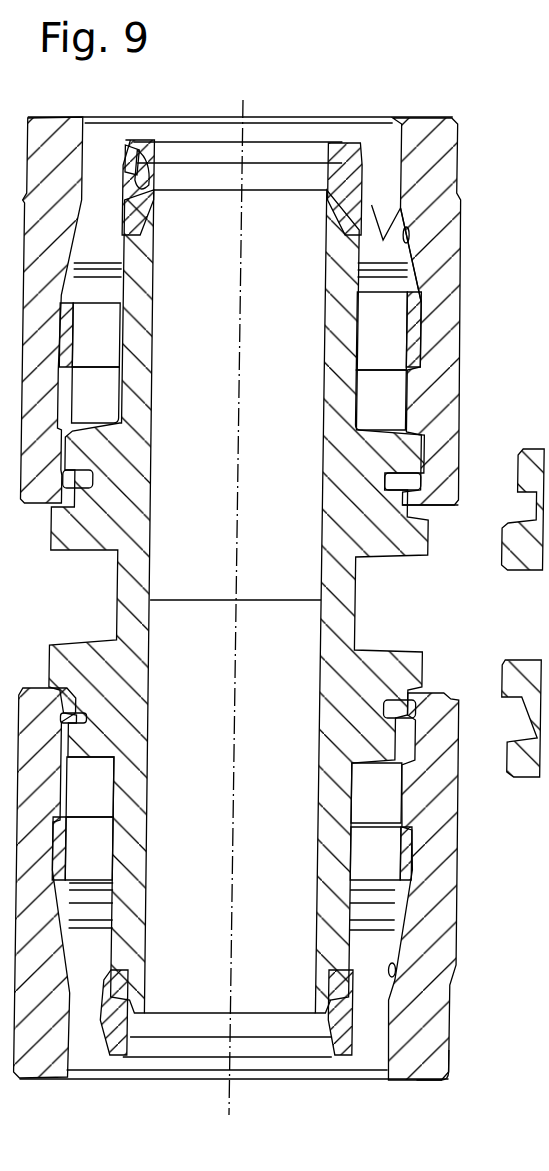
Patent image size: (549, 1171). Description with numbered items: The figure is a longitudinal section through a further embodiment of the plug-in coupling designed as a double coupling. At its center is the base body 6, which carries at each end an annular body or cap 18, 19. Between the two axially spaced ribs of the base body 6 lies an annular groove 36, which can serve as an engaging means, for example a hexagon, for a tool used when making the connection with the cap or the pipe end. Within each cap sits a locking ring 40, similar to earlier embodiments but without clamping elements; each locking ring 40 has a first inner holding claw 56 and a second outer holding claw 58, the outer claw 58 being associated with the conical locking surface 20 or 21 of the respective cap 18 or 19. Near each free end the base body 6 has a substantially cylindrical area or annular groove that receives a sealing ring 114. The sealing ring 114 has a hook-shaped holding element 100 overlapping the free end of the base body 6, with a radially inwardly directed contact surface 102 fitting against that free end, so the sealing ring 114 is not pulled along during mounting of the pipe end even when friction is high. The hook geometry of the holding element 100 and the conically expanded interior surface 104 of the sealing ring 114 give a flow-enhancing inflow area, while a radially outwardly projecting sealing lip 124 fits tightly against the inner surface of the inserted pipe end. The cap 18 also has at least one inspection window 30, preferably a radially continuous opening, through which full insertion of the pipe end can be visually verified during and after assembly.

The base body 6 is at (345, 600).
The annular body 18 is at (443, 492).
The cap 19 is at (449, 1077).
The conical locking surface 20 is at (417, 242).
The conical locking surface 21 is at (444, 995).
The inspection window 30 is at (367, 412).
The annular groove 36 is at (368, 807).
The locking ring 40 is at (413, 878).
The first inner holding claw 56 is at (416, 914).
The second outer holding claw 58 is at (410, 269).
The holding element 100 is at (363, 174).
The contact surface 102 is at (141, 171).
The interior surface 104 is at (151, 166).
The sealing ring 114 is at (373, 205).
The sealing lip 124 is at (406, 201).